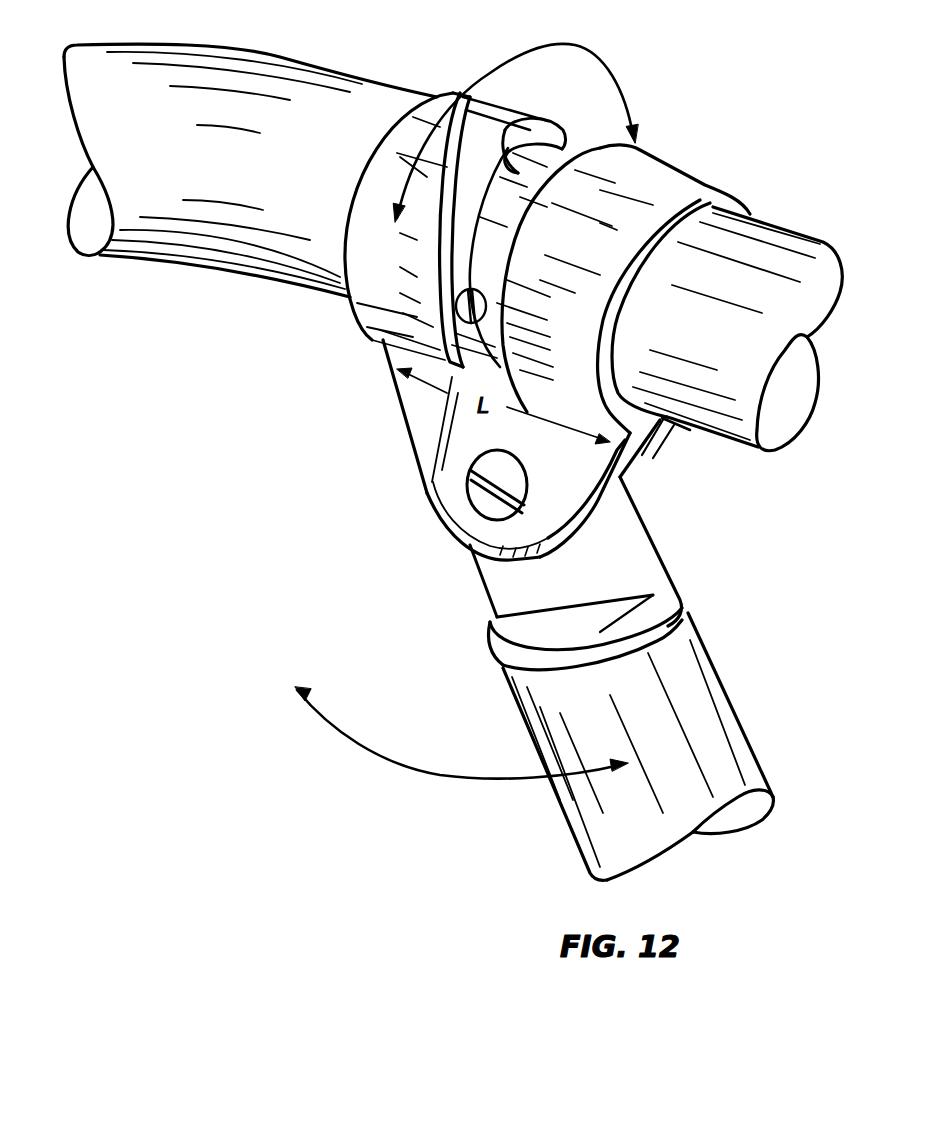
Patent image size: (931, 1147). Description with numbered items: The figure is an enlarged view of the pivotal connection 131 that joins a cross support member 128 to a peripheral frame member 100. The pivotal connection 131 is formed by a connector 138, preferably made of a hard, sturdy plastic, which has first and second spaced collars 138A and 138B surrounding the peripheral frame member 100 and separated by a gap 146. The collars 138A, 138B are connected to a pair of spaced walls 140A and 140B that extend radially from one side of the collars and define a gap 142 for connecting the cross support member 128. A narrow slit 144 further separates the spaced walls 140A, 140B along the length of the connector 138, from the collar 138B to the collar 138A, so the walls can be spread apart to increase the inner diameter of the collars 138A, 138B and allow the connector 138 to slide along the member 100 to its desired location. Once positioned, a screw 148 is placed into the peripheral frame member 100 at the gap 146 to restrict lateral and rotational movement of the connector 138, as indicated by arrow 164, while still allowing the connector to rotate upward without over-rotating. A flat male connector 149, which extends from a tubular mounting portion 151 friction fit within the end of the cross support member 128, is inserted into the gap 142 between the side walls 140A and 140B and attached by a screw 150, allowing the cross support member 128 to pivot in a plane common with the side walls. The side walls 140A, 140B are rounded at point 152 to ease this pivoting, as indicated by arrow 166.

The peripheral frame member 100 is at (240, 48).
The cross support member 128 is at (703, 663).
The pivotal connection 131 is at (682, 103).
The connector 138 is at (377, 293).
The first collar 138A is at (493, 103).
The second collar 138B is at (651, 165).
The first spaced wall 140A is at (407, 428).
The second spaced wall 140B is at (640, 497).
The gap 142 is at (660, 458).
The slit 144 is at (685, 432).
The gap 146 is at (510, 118).
The screw 148 is at (460, 290).
The flat male connector 149 is at (497, 587).
The screw 150 is at (467, 495).
The tubular mounting portion 151 is at (513, 657).
The rounded point 152 is at (460, 548).
The arrow 164 is at (520, 50).
The arrow 166 is at (403, 768).